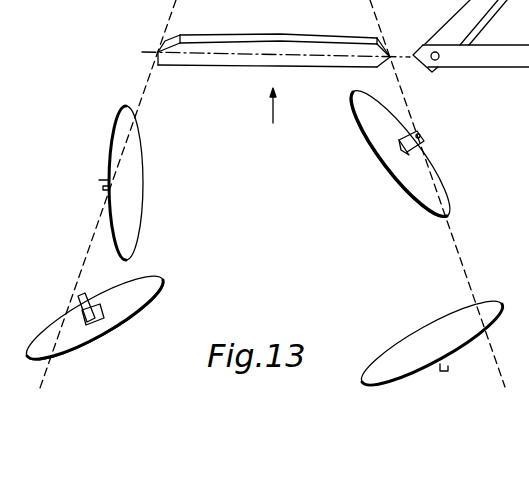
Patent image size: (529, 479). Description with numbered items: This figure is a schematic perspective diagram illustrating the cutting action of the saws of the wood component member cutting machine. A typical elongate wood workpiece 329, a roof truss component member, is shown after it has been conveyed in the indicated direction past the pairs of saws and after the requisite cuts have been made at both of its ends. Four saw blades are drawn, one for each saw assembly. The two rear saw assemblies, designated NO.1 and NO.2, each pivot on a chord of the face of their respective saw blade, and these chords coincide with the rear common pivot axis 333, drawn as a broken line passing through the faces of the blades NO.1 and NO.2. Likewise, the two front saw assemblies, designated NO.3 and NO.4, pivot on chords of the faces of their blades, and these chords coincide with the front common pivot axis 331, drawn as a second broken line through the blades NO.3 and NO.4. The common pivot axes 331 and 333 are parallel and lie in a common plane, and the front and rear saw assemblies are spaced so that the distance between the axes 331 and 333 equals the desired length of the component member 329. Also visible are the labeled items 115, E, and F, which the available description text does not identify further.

The workpiece 329 is at (268, 35).
The rear common pivot axis 333 is at (143, 98).
The front common pivot axis 331 is at (457, 252).
The disc 115 is at (142, 218).
The rear saw assembly NO.1 is at (151, 183).
The rear saw assembly NO.2 is at (150, 313).
The front saw assembly NO.3 is at (399, 331).
The front saw assembly NO.4 is at (380, 168).
The arm E is at (467, 13).
The frame member F is at (502, 45).